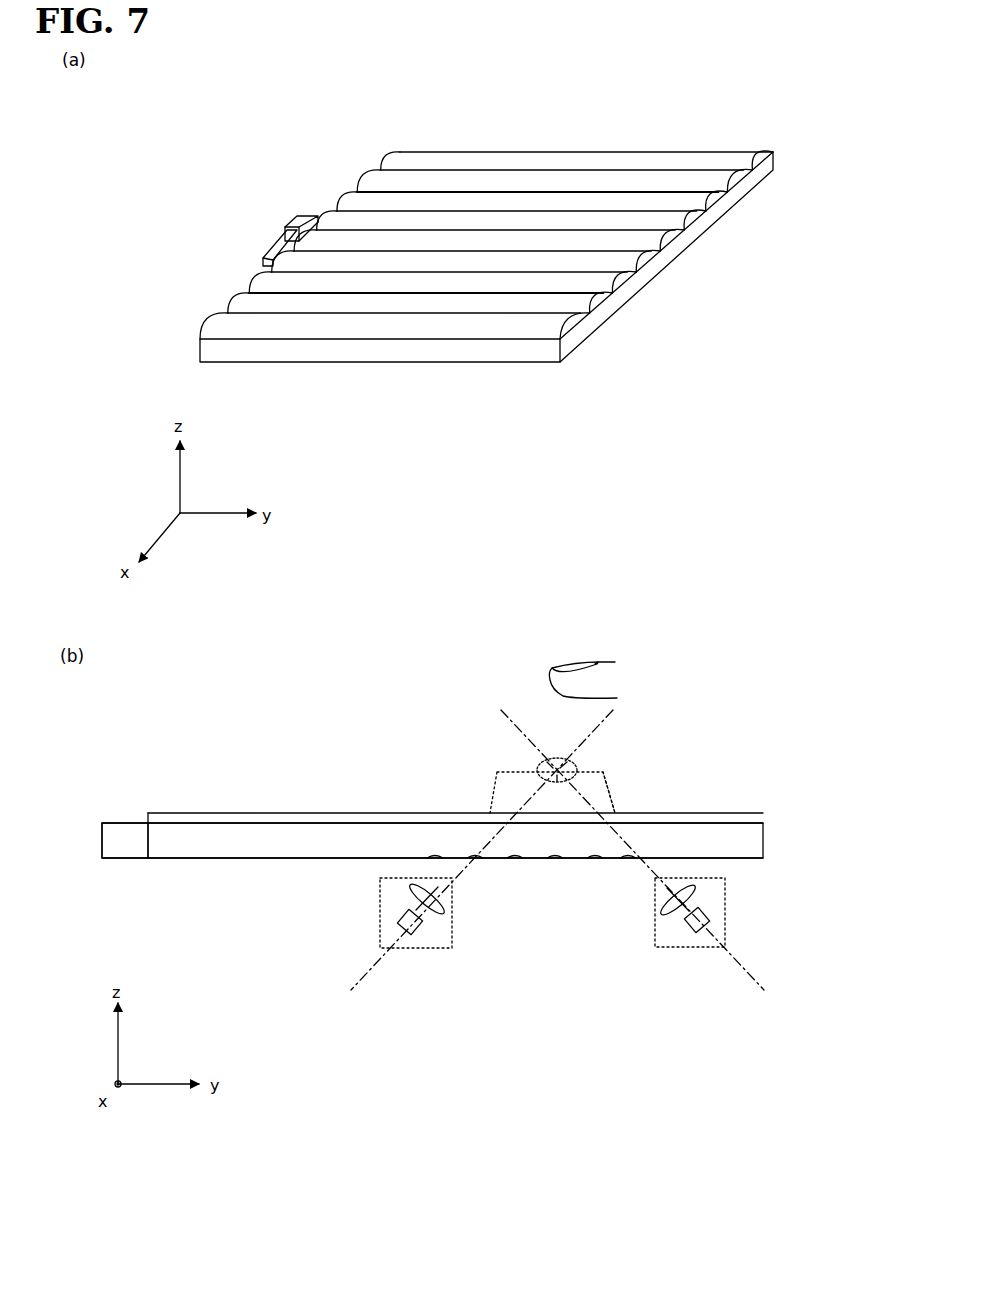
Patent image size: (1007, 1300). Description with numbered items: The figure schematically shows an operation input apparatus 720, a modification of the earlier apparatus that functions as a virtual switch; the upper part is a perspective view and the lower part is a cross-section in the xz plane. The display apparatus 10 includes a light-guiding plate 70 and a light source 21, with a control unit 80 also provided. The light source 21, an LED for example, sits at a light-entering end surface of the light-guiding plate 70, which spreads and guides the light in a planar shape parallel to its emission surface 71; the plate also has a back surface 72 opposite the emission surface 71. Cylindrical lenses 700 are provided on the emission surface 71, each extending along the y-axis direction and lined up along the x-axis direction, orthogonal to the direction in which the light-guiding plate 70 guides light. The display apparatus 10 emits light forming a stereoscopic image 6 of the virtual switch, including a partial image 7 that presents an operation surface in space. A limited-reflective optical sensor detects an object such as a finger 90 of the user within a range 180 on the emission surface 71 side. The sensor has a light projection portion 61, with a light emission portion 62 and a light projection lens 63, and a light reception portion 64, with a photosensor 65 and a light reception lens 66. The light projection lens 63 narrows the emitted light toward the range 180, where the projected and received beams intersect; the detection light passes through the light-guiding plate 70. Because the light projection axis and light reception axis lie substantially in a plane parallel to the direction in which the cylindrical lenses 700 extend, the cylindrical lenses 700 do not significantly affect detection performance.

The operation input apparatus 720 is at (713, 104).
The light-guiding plate 70 is at (776, 168).
The cylindrical lenses 700 is at (200, 332).
The control unit 80 is at (288, 224).
The light source 21 is at (276, 254).
The display apparatus 10 is at (204, 811).
The emission surface 71 is at (743, 815).
The back surface 72 is at (720, 858).
The finger 90 is at (615, 662).
The partial image 7 is at (495, 772).
The range 180 is at (578, 768).
The image 6 is at (607, 782).
The light projection portion 61 is at (378, 922).
The light emission portion 62 is at (423, 931).
The light projection lens 63 is at (448, 906).
The light reception portion 64 is at (729, 934).
The photosensor 65 is at (686, 932).
The light reception lens 66 is at (657, 905).